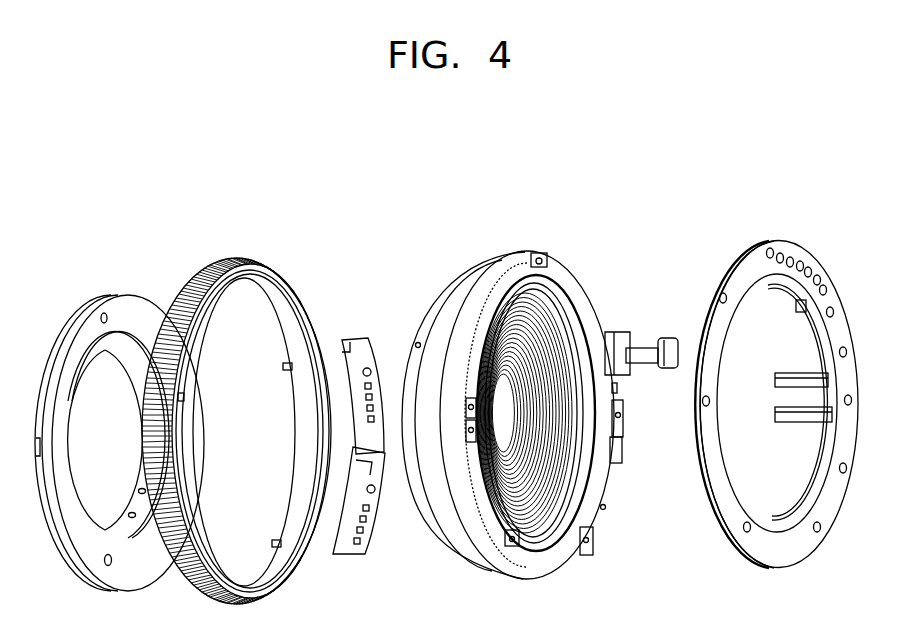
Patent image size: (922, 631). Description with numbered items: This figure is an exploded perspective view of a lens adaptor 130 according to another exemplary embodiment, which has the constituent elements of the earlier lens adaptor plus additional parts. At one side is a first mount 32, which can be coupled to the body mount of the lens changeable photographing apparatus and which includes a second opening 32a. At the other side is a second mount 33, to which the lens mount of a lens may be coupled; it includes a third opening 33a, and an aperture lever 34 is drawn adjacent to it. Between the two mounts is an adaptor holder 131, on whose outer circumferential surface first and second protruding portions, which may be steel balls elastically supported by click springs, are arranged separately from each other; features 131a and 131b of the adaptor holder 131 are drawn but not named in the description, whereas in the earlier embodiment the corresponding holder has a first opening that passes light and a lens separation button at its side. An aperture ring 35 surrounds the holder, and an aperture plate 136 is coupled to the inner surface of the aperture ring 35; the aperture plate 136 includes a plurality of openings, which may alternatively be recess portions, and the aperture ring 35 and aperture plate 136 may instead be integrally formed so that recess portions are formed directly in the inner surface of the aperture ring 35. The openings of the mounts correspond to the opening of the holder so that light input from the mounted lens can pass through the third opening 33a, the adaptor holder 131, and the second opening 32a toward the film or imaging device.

The lens adaptor 130 is at (822, 188).
The first mount 32 is at (108, 296).
The second opening 32a is at (85, 395).
The aperture ring 35 is at (216, 260).
The aperture plate 136 is at (360, 338).
The adaptor holder 131 is at (497, 262).
The barrel inner threaded portion 131a is at (578, 325).
The fixing knob 131b is at (668, 337).
The second mount 33 is at (737, 242).
The third opening 33a is at (748, 316).
The aperture lever 34 is at (775, 410).